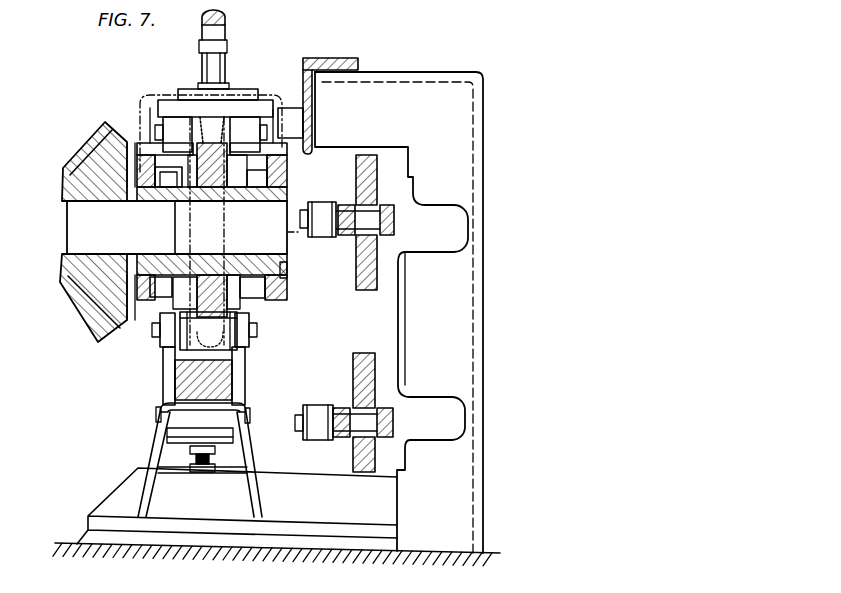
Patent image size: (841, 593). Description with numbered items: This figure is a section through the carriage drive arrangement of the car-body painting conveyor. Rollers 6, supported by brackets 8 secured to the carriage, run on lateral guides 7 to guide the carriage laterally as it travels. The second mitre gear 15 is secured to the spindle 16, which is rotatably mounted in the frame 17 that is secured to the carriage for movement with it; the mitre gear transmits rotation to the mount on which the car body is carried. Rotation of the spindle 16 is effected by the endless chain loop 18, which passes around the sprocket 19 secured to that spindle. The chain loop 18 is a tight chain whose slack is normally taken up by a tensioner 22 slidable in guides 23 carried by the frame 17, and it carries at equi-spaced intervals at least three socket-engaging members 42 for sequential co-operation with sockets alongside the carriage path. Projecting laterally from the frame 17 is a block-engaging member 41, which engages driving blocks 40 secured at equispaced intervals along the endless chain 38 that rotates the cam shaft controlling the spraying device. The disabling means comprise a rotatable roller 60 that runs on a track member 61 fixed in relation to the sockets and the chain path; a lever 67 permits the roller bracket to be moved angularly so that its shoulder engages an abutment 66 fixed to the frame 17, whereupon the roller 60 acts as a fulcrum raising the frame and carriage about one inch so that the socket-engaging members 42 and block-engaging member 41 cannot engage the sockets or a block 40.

The lateral guides 7 is at (341, 59).
The lever 67 is at (220, 33).
The tensioner 22 is at (232, 97).
The guides 23 is at (265, 97).
The socket-engaging members 42 is at (182, 125).
The second mitre gear 15 is at (122, 170).
The rollers 6 is at (290, 126).
The brackets 8 is at (280, 150).
The frame 17 is at (278, 169).
The abutment 66 is at (260, 184).
The block-engaging member 41 is at (296, 211).
The endless chain loop 18 is at (186, 165).
The spindle 16 is at (263, 229).
The endless chain 38 is at (377, 337).
The driving blocks 40 is at (336, 240).
The sprocket 19 is at (238, 316).
The roller 60 is at (173, 378).
The track member 61 is at (228, 393).